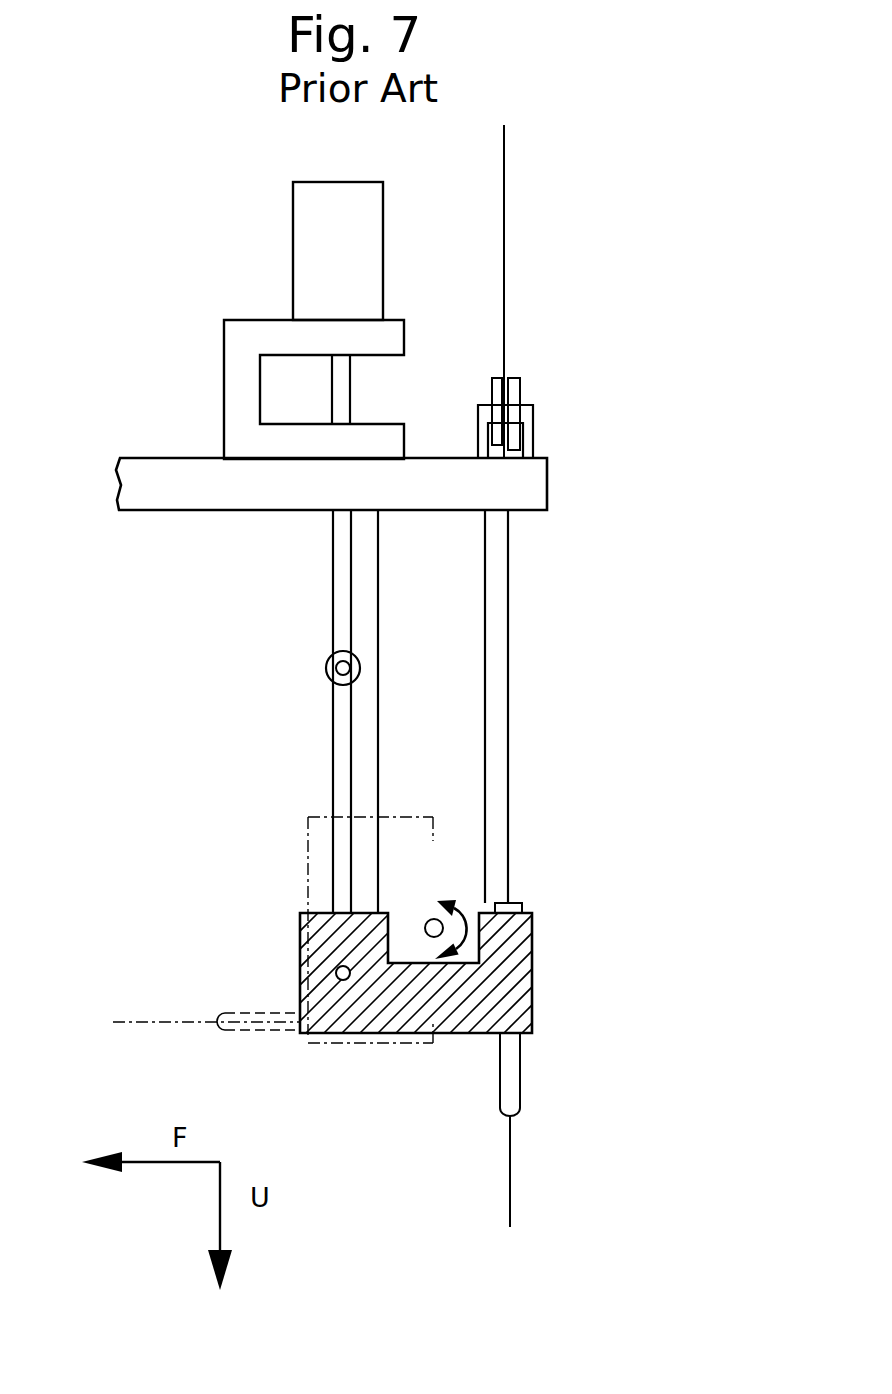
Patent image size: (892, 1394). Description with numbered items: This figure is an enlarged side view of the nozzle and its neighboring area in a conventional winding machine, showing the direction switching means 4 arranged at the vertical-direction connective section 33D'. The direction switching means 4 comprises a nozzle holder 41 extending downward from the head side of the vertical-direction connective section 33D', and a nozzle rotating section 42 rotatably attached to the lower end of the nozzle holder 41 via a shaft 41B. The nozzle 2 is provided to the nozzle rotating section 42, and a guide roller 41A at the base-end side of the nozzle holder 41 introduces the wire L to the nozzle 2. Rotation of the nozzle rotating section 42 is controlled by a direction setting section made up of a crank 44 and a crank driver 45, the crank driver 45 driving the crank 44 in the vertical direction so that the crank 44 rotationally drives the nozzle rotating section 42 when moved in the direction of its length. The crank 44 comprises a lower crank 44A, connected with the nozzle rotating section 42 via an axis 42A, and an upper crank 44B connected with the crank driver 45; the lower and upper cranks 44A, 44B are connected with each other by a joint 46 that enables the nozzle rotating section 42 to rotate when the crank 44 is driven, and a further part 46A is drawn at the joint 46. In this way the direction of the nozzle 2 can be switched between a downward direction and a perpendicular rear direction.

The crank driver 45 is at (317, 247).
The vertical-direction connective section 33D' is at (307, 401).
The wire L is at (507, 270).
The guide roller 41A is at (517, 392).
The direction switching means 4 is at (543, 601).
The crank 44 is at (160, 590).
The lower crank 44A is at (337, 745).
The upper crank 44B is at (337, 570).
The joint 46 is at (360, 663).
The pivot shaft 46A is at (358, 679).
The nozzle holder 41 is at (462, 733).
The shaft 41B is at (430, 918).
The nozzle rotating section 42 is at (532, 970).
The axis 42A is at (337, 967).
The nozzle 2 is at (520, 1072).